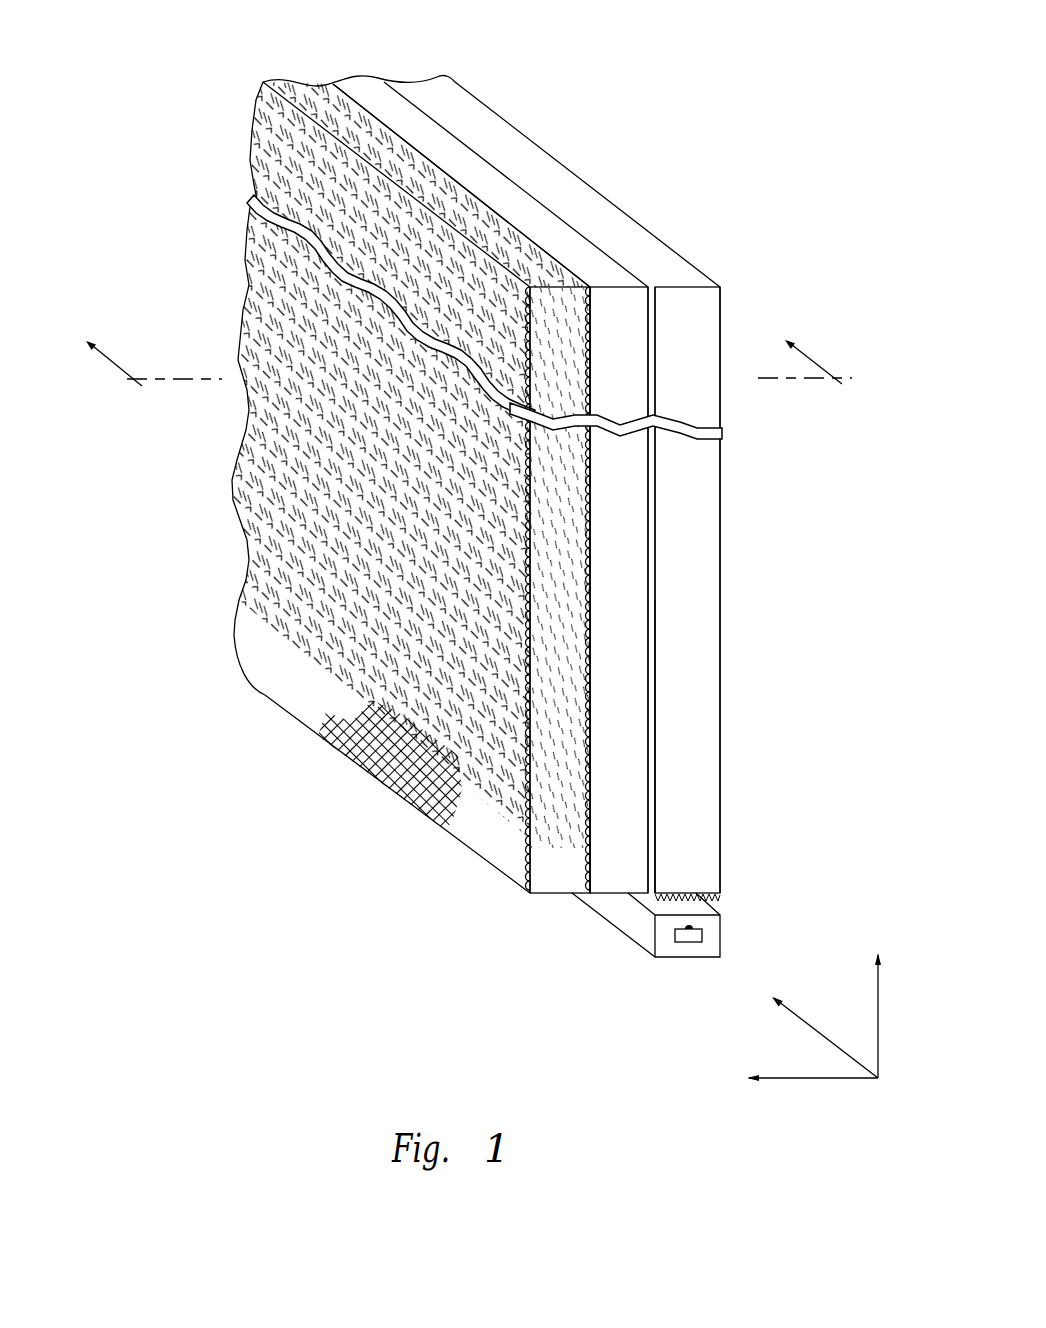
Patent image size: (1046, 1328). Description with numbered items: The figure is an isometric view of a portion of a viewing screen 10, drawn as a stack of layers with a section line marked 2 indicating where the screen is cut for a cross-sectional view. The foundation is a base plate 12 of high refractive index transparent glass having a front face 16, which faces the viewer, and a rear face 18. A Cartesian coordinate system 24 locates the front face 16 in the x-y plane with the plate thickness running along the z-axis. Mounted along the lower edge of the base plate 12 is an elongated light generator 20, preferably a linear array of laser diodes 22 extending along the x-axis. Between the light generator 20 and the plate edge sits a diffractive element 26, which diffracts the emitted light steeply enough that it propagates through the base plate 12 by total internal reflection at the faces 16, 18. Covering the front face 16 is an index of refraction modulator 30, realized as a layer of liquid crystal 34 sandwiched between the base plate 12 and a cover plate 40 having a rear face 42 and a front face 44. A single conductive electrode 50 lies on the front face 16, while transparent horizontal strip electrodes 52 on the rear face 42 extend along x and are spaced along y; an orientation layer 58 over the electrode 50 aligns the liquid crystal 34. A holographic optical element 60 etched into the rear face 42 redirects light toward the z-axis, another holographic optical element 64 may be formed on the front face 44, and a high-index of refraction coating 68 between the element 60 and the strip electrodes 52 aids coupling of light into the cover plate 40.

The viewing screen 10 is at (664, 65).
The base plate 12 is at (687, 590).
The front face 16 is at (657, 570).
The rear face 18 is at (723, 641).
The light generator 20 is at (722, 929).
The laser diodes 22 is at (686, 942).
The Cartesian coordinate system 24 is at (878, 1083).
The diffractive element 26 is at (718, 895).
The index of refraction modulator 30 is at (584, 287).
The liquid crystal 34 is at (619, 590).
The cover plate 40 is at (560, 590).
The rear face 42 is at (583, 851).
The front face 44 is at (526, 853).
The single conductive electrode 50 is at (656, 783).
The strip electrodes 52 is at (340, 108).
The orientation layer 58 is at (648, 285).
The holographic optical element 60 is at (610, 268).
The holographic optical element 64 is at (535, 287).
The high-index of refraction coating 68 is at (592, 810).
The section line 2- 2 is at (453, 351).